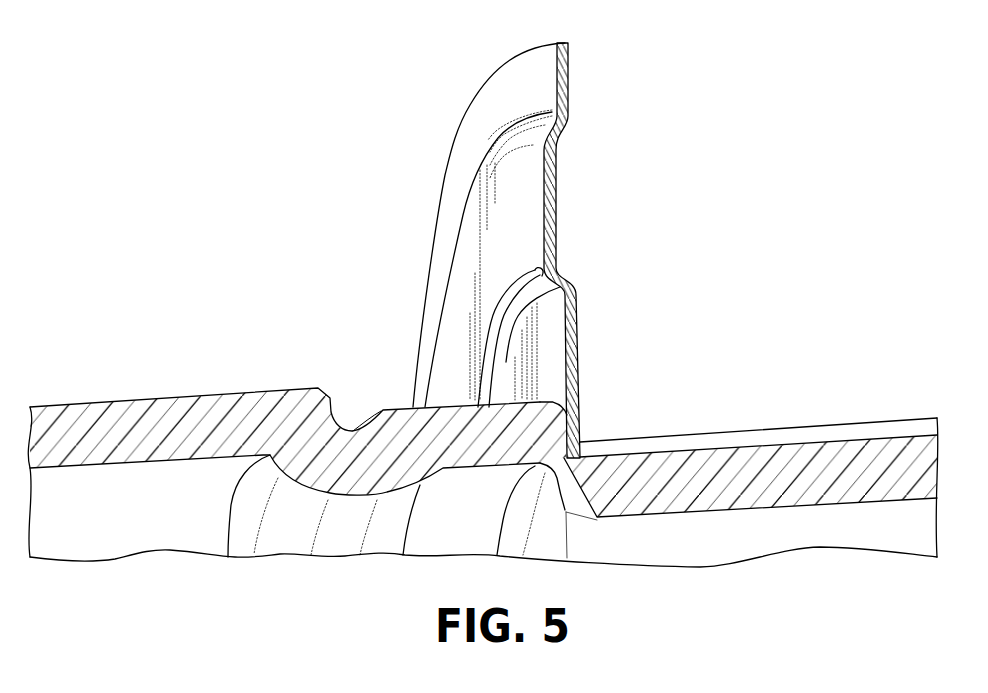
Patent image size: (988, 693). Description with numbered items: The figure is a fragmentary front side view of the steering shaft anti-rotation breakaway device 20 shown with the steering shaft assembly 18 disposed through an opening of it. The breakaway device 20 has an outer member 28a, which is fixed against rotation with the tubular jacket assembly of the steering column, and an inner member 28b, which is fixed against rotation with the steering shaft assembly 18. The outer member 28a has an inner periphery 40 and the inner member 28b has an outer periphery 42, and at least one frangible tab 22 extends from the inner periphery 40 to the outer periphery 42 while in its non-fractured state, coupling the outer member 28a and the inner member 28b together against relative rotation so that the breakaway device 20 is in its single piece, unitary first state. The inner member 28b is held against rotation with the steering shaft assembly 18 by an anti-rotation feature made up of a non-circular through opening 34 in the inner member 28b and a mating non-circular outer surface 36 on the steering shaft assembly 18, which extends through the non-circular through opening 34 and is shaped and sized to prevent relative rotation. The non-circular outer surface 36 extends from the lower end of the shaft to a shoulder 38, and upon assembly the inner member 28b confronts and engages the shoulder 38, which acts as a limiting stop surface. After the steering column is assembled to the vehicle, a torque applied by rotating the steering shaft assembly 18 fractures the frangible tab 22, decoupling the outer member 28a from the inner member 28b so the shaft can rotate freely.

The steering shaft assembly 18 is at (223, 392).
The breakaway device 20 is at (483, 84).
The frangible tab 22 is at (558, 272).
The outer member 28a is at (498, 216).
The inner member 28b is at (537, 382).
The non-circular through opening 34 is at (575, 459).
The non-circular outer surface 36 is at (602, 452).
The shoulder 38 is at (568, 419).
The inner periphery 40 is at (503, 307).
The outer periphery 42 is at (505, 347).